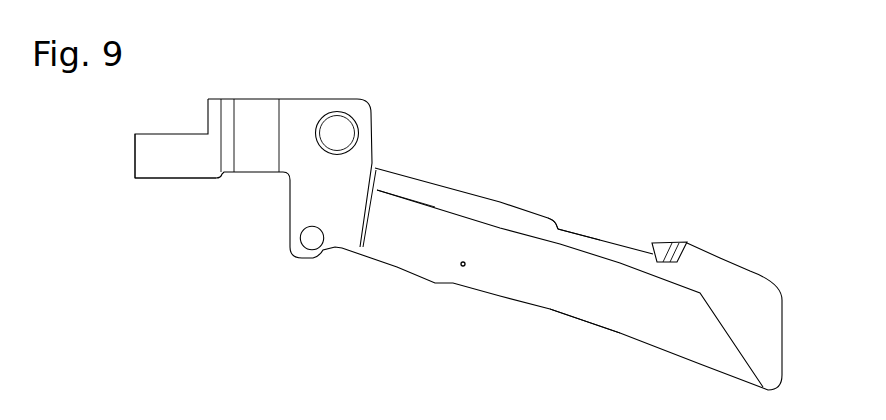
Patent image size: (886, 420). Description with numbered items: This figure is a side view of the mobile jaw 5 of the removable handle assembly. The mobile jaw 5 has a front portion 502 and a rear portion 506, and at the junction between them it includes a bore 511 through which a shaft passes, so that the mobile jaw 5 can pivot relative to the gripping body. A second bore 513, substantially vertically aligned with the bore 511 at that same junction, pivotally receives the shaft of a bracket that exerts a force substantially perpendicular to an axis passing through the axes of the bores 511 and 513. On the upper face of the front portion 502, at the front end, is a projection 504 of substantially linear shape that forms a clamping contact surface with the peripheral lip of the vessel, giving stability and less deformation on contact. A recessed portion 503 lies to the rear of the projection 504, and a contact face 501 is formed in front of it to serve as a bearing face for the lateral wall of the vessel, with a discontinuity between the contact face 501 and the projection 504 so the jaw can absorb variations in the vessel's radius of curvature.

The mobile jaw 5 is at (405, 324).
The contact face 501 is at (780, 327).
The front portion 502 is at (578, 318).
The recessed portion 503 is at (584, 232).
The projection 504 is at (680, 240).
The rear portion 506 is at (219, 178).
The bore 511 is at (340, 134).
The bore 513 is at (308, 239).